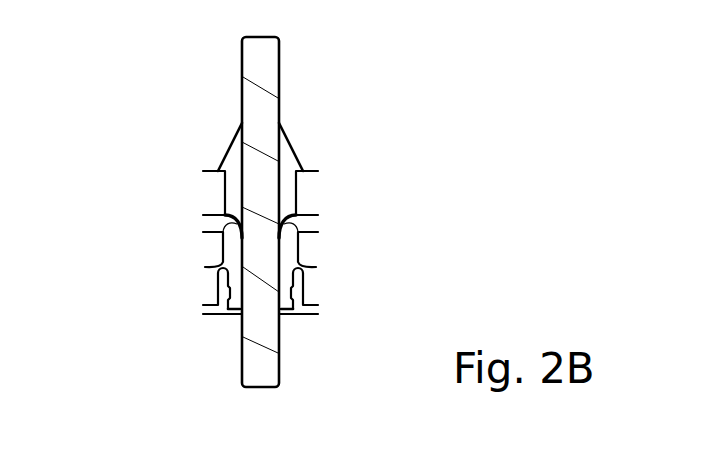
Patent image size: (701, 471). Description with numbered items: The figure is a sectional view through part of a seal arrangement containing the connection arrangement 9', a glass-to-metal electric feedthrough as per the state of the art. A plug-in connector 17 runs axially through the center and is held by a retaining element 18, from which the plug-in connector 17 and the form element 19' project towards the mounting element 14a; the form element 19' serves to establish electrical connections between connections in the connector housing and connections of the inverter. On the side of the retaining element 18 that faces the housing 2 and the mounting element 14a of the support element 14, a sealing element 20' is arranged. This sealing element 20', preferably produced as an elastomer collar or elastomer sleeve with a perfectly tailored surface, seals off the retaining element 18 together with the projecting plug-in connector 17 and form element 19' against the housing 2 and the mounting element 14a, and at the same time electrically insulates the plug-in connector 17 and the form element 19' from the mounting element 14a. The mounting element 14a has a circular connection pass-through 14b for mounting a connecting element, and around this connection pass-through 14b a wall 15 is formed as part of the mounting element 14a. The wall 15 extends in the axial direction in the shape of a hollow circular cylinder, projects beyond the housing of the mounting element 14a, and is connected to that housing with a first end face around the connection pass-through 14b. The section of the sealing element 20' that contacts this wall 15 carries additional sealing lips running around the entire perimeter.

The connection arrangement 9' is at (251, 193).
The plug-in connector 17 is at (249, 70).
The form element 19' is at (321, 133).
The retaining element 18 is at (207, 187).
The sealing element 20' is at (185, 195).
The housing 2 is at (208, 252).
The support element 14 is at (165, 286).
The mounting element 14a is at (210, 312).
The wall 15 is at (302, 288).
The connection pass-through 14b is at (290, 317).